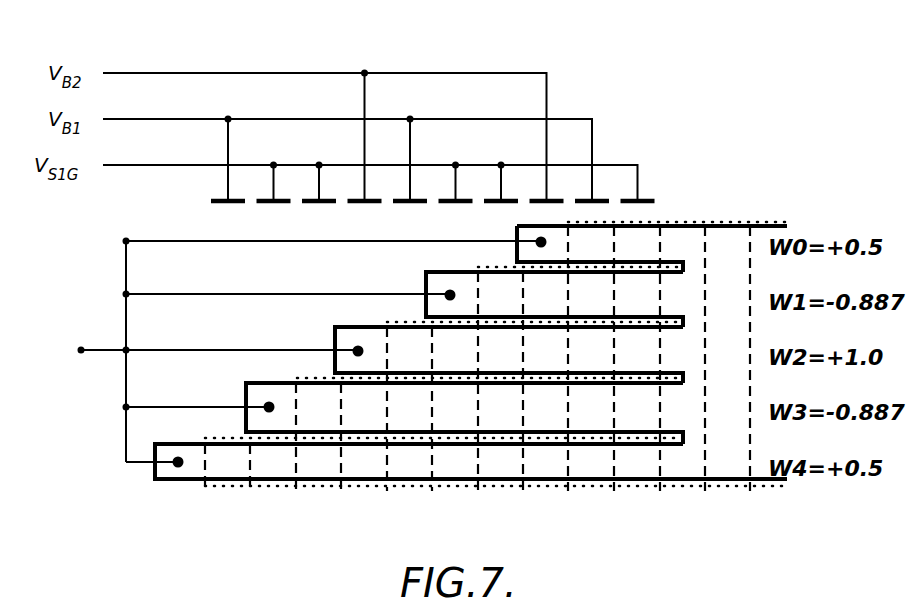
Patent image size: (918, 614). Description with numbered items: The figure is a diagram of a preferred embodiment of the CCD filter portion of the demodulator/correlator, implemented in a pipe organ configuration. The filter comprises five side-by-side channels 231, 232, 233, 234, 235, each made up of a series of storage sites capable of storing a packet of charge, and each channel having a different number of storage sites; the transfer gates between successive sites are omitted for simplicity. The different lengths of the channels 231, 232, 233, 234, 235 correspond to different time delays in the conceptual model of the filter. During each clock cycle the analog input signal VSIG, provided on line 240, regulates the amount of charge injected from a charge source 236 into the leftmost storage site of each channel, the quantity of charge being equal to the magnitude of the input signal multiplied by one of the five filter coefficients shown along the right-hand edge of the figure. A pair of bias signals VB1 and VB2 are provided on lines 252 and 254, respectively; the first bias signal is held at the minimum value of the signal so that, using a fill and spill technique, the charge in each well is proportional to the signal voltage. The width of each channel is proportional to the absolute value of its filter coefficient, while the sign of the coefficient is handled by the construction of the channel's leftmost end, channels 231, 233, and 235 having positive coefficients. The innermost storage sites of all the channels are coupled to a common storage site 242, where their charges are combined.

The channel 231 is at (508, 236).
The channel 232 is at (414, 280).
The channel 233 is at (324, 335).
The channel 234 is at (232, 393).
The channel 235 is at (178, 486).
The charge source 236 is at (80, 352).
The line 240 is at (147, 165).
The common storage site 242 is at (685, 223).
The line 252 is at (160, 119).
The line 254 is at (265, 73).